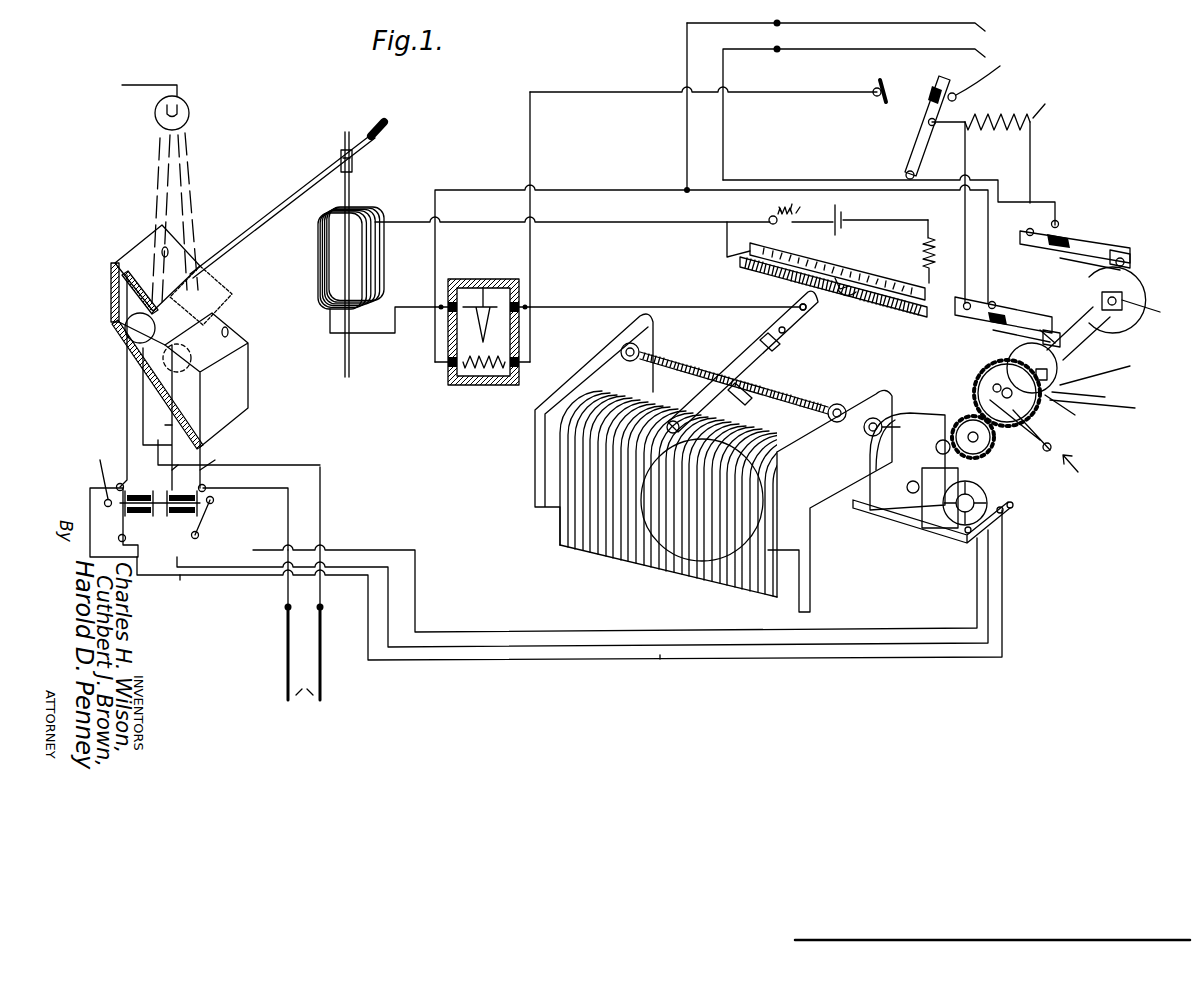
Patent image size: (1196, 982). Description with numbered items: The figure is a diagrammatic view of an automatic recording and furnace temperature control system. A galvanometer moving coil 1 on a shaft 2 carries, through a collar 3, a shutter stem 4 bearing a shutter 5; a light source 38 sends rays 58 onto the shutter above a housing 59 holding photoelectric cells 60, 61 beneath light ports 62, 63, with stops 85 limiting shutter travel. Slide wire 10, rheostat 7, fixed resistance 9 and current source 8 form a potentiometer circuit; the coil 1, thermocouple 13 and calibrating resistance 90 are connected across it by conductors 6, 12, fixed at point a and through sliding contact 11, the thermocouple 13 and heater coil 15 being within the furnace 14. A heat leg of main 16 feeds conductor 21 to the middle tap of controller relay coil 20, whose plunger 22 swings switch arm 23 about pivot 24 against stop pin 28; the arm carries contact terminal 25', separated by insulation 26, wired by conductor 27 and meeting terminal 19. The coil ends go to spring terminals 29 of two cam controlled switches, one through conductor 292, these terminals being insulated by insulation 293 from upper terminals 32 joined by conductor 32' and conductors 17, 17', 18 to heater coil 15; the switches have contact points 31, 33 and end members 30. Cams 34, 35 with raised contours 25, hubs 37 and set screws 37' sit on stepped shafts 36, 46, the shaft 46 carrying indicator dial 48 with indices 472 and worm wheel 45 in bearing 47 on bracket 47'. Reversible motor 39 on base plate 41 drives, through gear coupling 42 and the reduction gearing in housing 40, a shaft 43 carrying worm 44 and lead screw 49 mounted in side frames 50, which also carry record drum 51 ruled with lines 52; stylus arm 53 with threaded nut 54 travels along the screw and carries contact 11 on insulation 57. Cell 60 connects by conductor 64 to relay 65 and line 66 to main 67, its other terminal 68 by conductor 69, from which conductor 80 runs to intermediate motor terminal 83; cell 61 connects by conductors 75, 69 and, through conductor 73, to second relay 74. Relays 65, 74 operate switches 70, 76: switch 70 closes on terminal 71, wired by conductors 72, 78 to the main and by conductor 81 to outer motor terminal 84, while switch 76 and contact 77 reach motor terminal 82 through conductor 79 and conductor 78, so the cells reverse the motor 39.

The galvanometer moving coil 1 is at (370, 262).
The shaft 2 is at (349, 180).
The collar 3 is at (352, 165).
The shutter stem 4 is at (290, 198).
The shutter 5 is at (220, 285).
The conductor 6 is at (590, 222).
The rheostat 7 is at (800, 212).
The source of current supply 8 is at (848, 216).
The fixed resistance 9 is at (918, 247).
The slide wire 10 is at (745, 268).
The sliding contact 11 is at (842, 300).
The conductor 12 is at (605, 307).
The thermocouple 13 is at (475, 325).
The heated chamber 14 is at (490, 280).
The heater coil 15 is at (485, 376).
The current main 16 is at (847, 100).
The conductor 17 is at (544, 192).
The conductor 17' is at (837, 244).
The wire 18 is at (530, 135).
The terminal 19 is at (878, 78).
The controller relay coil 20 is at (1000, 112).
The conductor 21 is at (723, 152).
The reciprocable plunger 22 is at (1050, 144).
The switch arm 23 is at (922, 146).
The pivot point 24 is at (915, 175).
The raised cam contours 25 is at (1059, 337).
The contact terminal 25' is at (925, 78).
The insulation 26 is at (961, 77).
The conductor 27 is at (928, 118).
The stop pin 28 is at (994, 72).
The spring terminal 29 is at (1050, 246).
The conductor 292 is at (1045, 165).
The insulation 293 is at (1060, 222).
The pivot 30 is at (1132, 262).
The contact points 31 is at (1056, 304).
The upper terminals 32 is at (1050, 268).
The conductor 32' is at (1011, 269).
The contact points 33 is at (1128, 250).
The settable cam 34 is at (1140, 290).
The settable cam 35 is at (1087, 340).
The cam shaft 36 is at (1060, 360).
The integral hub 37 is at (1142, 337).
The set screw 37' is at (1159, 329).
The source of light 38 is at (189, 110).
The reversible electric motor 39 is at (985, 495).
The housing 40 is at (862, 512).
The base plate 41 is at (905, 520).
The gear coupling 42 is at (885, 515).
The gear driven shaft 43 is at (885, 425).
The worm 44 is at (985, 455).
The worm wheel 45 is at (1055, 448).
The shaft 46 is at (975, 390).
The bearing 47 is at (980, 372).
The bracket 47' is at (1071, 412).
The indices 472 is at (1105, 410).
The indicator dial 48 is at (1090, 400).
The lead screw 49 is at (815, 400).
The side frames 50 is at (640, 345).
The record drum 51 is at (560, 530).
The ruled lines 52 is at (610, 555).
The stylus arm 53 is at (748, 357).
The threaded bearing nut 54 is at (760, 385).
The insulation 57 is at (800, 335).
The light rays 58 is at (180, 165).
The housing 59 is at (111, 268).
The photoelectric cell 60 is at (125, 338).
The photoelectric cell 61 is at (200, 394).
The light port 62 is at (205, 318).
The light port 63 is at (140, 313).
The conductor 64 is at (127, 393).
The relay 65 is at (93, 472).
The line 66 is at (300, 465).
The main source of current supply 67 is at (304, 597).
The cell terminal 68 is at (143, 420).
The conductor 69 is at (280, 465).
The switch 70 is at (123, 520).
The terminal 71 is at (115, 485).
The conductor 72 is at (130, 570).
The conductor 73 is at (215, 440).
The relay 74 is at (179, 459).
The conductor 75 is at (161, 419).
The switch 76 is at (212, 510).
The switch contact 77 is at (219, 458).
The conductor 78 is at (213, 575).
The conductor 79 is at (385, 550).
The conductor 80 is at (660, 659).
The conductor 81 is at (183, 575).
The motor terminal 82 is at (967, 540).
The intermediate motor terminal 83 is at (1000, 520).
The outer motor terminal 84 is at (1012, 510).
The stops 85 is at (160, 250).
The calibrating resistance 90 is at (1080, 467).
The point A a is at (1103, 372).